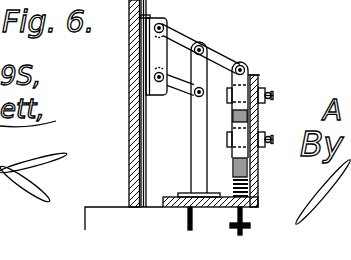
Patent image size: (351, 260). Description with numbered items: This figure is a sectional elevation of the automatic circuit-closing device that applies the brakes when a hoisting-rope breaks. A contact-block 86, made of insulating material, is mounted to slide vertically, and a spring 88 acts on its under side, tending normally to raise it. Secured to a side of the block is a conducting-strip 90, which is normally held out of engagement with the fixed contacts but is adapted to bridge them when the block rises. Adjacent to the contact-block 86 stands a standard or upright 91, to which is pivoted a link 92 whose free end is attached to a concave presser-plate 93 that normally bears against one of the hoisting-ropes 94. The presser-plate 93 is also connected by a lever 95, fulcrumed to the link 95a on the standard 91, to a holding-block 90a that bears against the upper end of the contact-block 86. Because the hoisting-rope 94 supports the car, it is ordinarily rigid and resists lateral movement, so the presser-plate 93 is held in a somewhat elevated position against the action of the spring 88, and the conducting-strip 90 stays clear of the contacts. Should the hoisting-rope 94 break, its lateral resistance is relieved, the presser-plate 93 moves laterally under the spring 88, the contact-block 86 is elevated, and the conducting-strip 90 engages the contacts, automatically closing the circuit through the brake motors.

The contact-block 86 is at (258, 170).
The spring 88 is at (258, 192).
The conducting-strip 90 is at (258, 137).
The holding-block 90a is at (246, 66).
The standard or upright 91 is at (200, 153).
The link 92 is at (182, 86).
The concave presser-plate 93 is at (142, 63).
The hoisting-rope 94 is at (134, 119).
The lever 95 is at (182, 40).
The link 95a is at (205, 73).